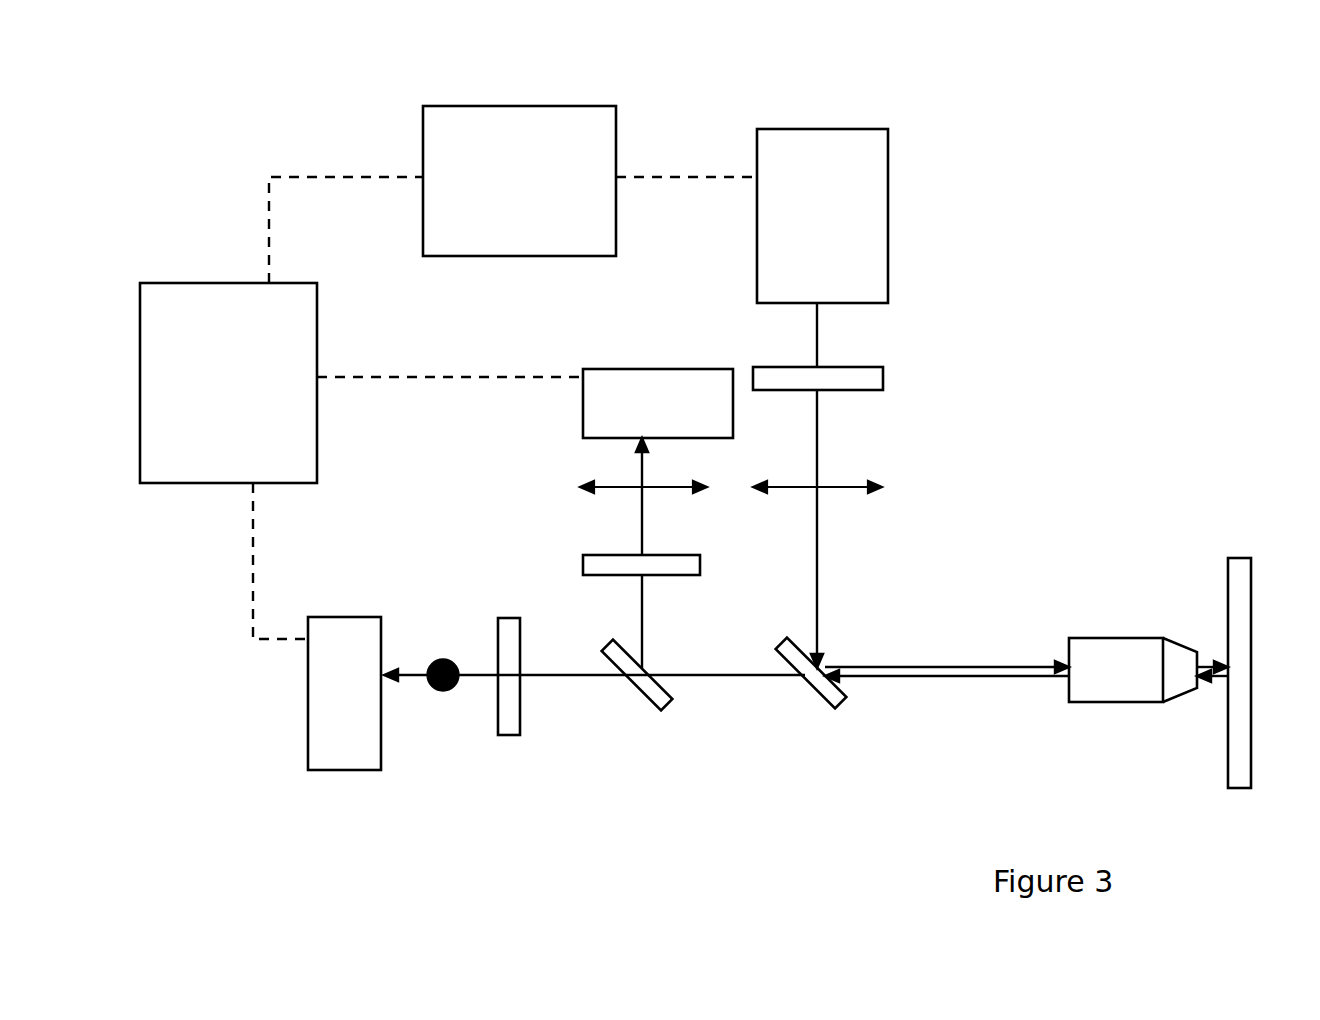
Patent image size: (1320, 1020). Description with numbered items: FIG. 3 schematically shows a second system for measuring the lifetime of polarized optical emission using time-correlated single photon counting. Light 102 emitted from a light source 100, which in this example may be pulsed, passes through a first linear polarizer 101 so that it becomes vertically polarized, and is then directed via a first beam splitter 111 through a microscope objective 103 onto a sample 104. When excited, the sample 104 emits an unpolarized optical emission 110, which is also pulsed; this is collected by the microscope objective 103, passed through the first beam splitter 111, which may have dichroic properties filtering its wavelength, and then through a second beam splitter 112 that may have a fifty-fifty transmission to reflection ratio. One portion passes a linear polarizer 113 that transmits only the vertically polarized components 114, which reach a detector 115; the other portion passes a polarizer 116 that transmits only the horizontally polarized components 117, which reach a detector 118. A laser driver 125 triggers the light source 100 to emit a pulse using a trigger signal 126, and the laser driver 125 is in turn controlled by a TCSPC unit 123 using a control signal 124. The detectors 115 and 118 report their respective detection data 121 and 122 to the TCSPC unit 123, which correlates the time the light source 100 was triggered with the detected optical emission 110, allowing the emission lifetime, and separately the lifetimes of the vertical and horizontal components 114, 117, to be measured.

The light source 100 is at (842, 128).
The linear polarizer 101 is at (885, 378).
The vertically polarized light 102 is at (830, 575).
The microscope objective 103 is at (1098, 637).
The sample 104 is at (1234, 552).
The optical emission 110 is at (980, 678).
The first beam splitter 111 is at (833, 712).
The second beam splitter 112 is at (660, 712).
The linear polarizer 113 is at (575, 570).
The vertically polarized components 114 is at (570, 487).
The detector 115 is at (625, 367).
The polarizer 116 is at (507, 740).
The horizontally polarized components 117 is at (445, 700).
The detector 118 is at (338, 615).
The detection data 121 is at (403, 370).
The detection data 122 is at (247, 568).
The TCSPC unit 123 is at (138, 296).
The control signal 124 is at (305, 165).
The laser driver 125 is at (533, 103).
The trigger signal 126 is at (665, 165).